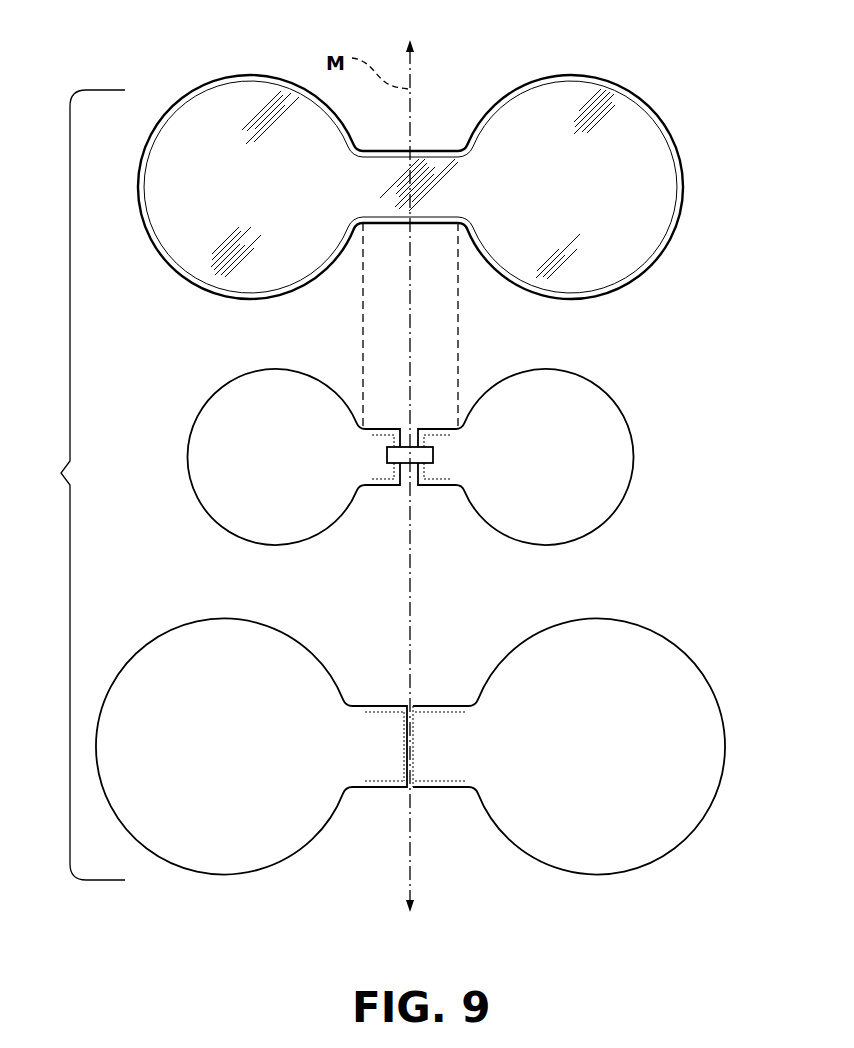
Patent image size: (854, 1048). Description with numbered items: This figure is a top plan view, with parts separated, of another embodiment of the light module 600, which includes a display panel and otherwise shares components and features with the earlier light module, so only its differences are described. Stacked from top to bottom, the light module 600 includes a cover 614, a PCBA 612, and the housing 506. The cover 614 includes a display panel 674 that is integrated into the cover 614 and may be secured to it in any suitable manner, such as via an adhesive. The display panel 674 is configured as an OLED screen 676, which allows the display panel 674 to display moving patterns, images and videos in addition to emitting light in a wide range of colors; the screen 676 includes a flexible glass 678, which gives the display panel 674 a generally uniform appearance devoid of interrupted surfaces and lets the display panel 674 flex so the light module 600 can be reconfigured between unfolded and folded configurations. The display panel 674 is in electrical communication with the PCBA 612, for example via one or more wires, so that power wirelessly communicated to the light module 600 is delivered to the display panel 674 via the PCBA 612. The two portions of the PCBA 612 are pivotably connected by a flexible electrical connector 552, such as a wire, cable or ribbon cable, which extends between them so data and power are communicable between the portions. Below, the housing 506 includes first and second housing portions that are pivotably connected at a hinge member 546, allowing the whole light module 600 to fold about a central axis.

The light module 600 is at (69, 485).
The cover 614 is at (461, 158).
The display panel 674 is at (674, 128).
The screen 676 is at (629, 188).
The flexible glass 678 is at (574, 259).
The PCBA 612 is at (458, 447).
The electrical connector 552 is at (433, 445).
The housing 506 is at (440, 733).
The hinge member 546 is at (422, 746).